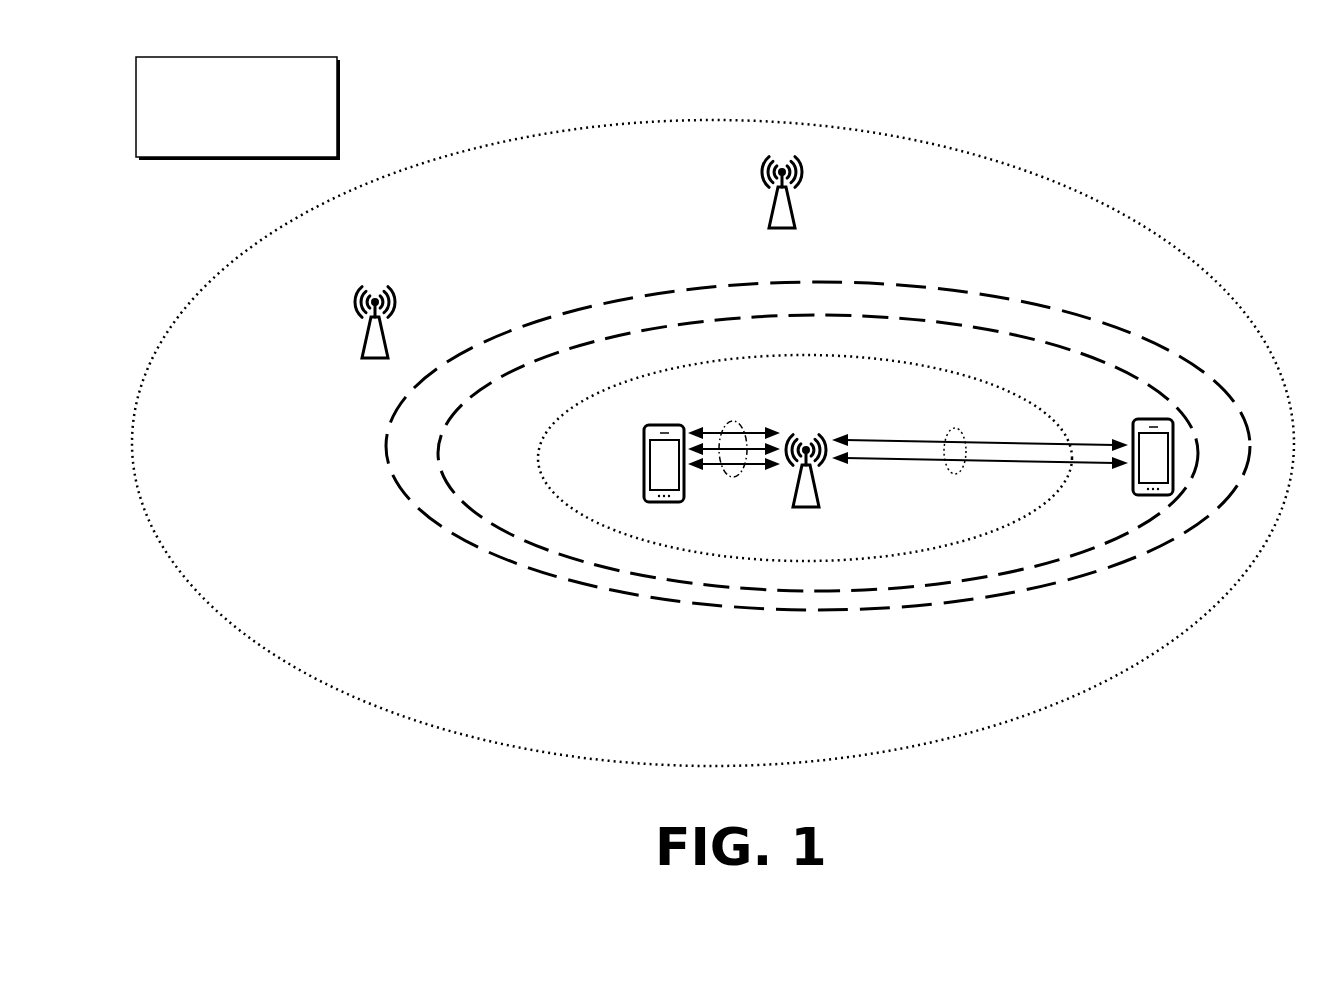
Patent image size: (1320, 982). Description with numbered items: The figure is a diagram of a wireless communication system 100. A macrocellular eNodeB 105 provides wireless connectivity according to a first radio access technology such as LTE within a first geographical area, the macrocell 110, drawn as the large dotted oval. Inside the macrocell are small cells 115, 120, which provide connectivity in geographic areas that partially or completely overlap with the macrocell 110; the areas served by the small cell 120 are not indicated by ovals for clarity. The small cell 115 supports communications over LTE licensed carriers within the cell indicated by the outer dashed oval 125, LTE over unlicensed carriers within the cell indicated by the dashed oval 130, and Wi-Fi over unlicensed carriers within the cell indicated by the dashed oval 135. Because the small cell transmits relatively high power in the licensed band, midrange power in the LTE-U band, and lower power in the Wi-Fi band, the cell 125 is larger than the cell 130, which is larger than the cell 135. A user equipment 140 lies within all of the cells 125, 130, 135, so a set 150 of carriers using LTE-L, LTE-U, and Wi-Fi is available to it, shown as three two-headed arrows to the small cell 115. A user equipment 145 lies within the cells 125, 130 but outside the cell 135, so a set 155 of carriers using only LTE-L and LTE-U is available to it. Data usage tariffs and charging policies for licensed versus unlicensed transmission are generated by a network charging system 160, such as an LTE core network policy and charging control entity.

The wireless communication system 100 is at (1172, 111).
The macrocellular eNodeB 105 is at (378, 360).
The cell 110 is at (420, 724).
The small cell 115 is at (806, 509).
The small cell 120 is at (782, 230).
The cell 125 is at (458, 540).
The cell 130 is at (575, 566).
The cell 135 is at (820, 568).
The user equipment 140 is at (643, 466).
The user equipment 145 is at (1130, 434).
The set of carriers 150 is at (736, 420).
The set of carriers 155 is at (955, 428).
The network charging system 160 is at (238, 108).